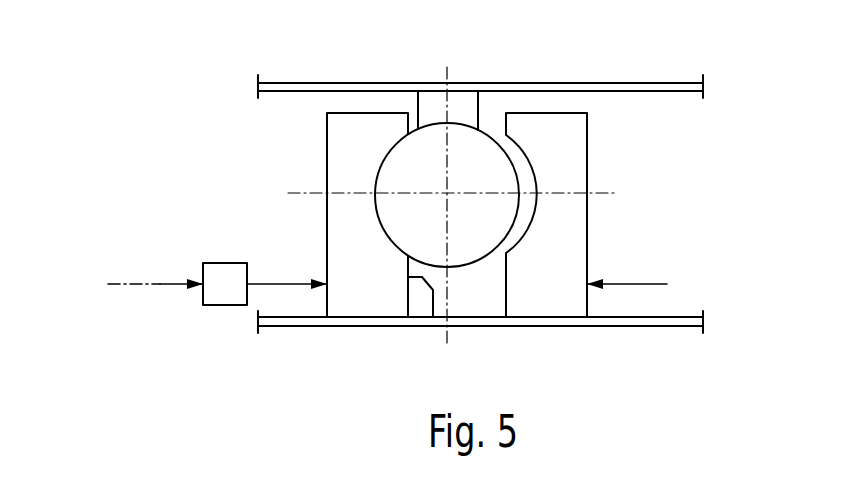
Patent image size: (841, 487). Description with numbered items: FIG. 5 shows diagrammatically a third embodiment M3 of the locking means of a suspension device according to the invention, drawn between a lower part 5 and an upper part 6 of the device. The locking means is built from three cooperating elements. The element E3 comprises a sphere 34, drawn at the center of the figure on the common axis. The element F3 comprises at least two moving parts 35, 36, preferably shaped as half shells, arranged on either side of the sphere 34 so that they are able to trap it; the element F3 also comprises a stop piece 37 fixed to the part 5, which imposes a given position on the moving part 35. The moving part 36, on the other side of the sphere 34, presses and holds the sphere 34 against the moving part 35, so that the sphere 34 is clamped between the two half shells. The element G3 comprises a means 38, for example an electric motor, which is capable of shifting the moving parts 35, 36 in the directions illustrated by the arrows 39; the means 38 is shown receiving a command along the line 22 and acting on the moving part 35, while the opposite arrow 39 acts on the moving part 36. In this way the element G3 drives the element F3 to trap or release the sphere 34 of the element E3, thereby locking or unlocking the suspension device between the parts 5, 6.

The part 5 is at (673, 326).
The upper guide rail 6 is at (668, 83).
The control signal input 22 is at (135, 288).
The sphere 34 is at (477, 150).
The moving part 35 is at (327, 212).
The moving part 36 is at (575, 219).
The stop piece 37 is at (418, 307).
The means 38 is at (222, 305).
The arrows 39 is at (278, 283).
The third embodiment of the locking means M3 is at (207, 76).
The element E3 is at (412, 108).
The element F3 is at (311, 158).
The element G3 is at (192, 250).